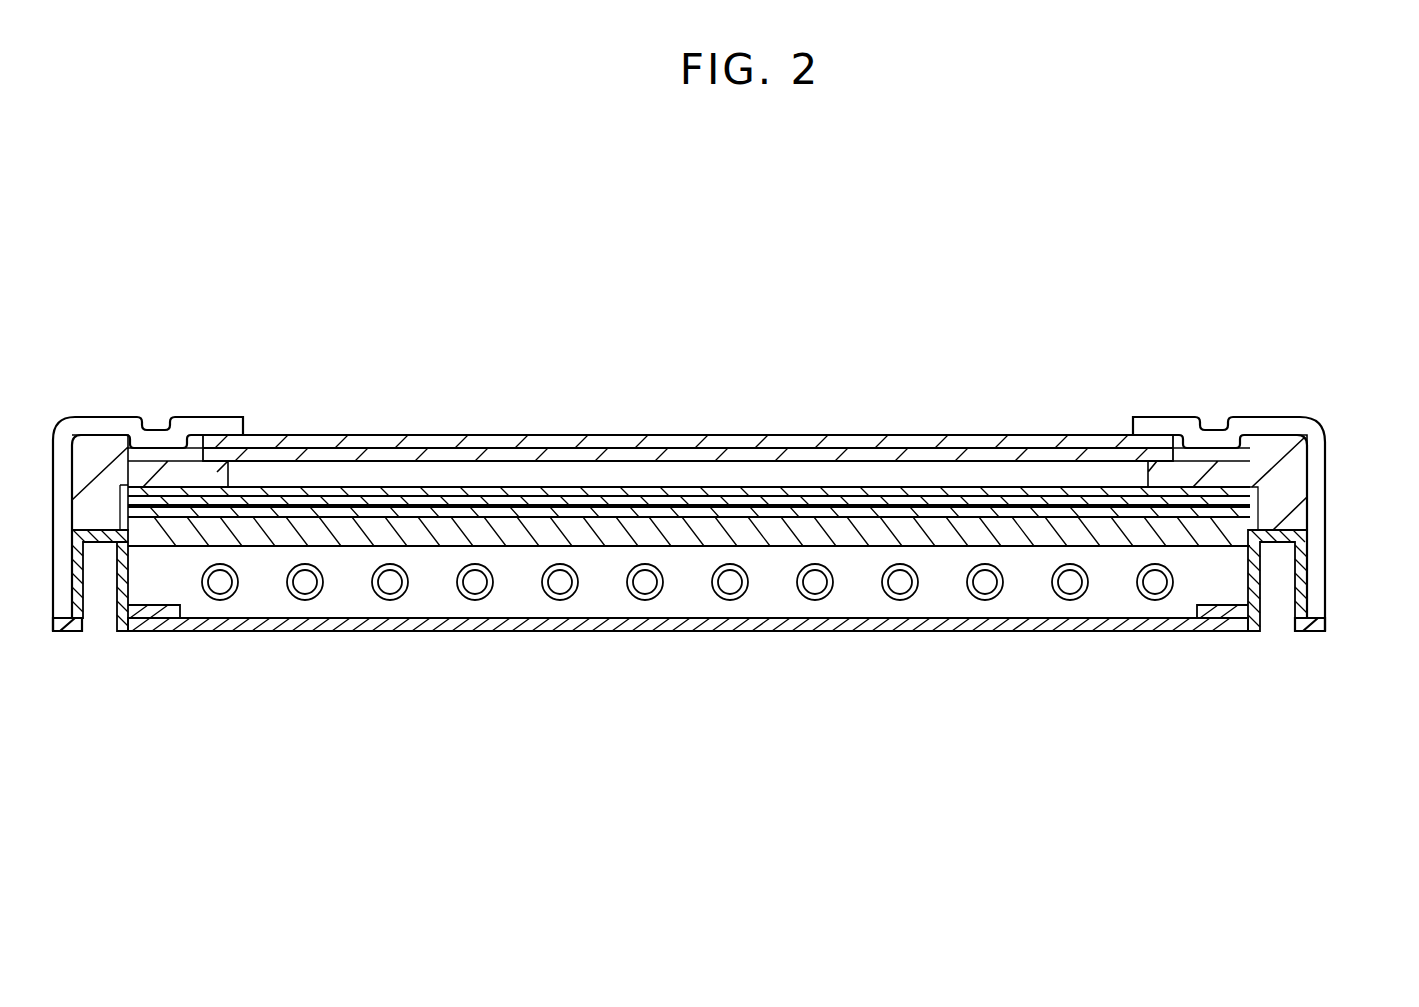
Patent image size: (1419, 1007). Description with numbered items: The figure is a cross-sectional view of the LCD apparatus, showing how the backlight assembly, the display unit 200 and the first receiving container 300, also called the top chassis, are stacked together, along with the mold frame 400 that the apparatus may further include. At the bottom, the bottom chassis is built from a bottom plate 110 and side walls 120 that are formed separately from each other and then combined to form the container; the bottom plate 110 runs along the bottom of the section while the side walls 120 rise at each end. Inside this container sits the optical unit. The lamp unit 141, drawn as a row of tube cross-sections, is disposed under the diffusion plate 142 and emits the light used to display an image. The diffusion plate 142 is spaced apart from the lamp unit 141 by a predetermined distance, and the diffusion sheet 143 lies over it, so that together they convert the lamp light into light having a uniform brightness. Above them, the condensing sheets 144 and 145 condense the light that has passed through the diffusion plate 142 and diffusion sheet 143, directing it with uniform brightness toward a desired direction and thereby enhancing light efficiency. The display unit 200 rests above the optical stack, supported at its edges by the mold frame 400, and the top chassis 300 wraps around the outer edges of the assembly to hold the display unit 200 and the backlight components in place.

The bottom plate 110 is at (1153, 626).
The side walls 120 is at (1298, 545).
The lamp unit 141 is at (1070, 586).
The diffusion plate 142 is at (526, 532).
The diffusion sheet 143 is at (594, 511).
The condensing sheet 144 is at (651, 502).
The condensing sheet 145 is at (712, 493).
The display unit 200 is at (772, 442).
The first receiving container 300 is at (1268, 428).
The mold frame 400 is at (1296, 485).